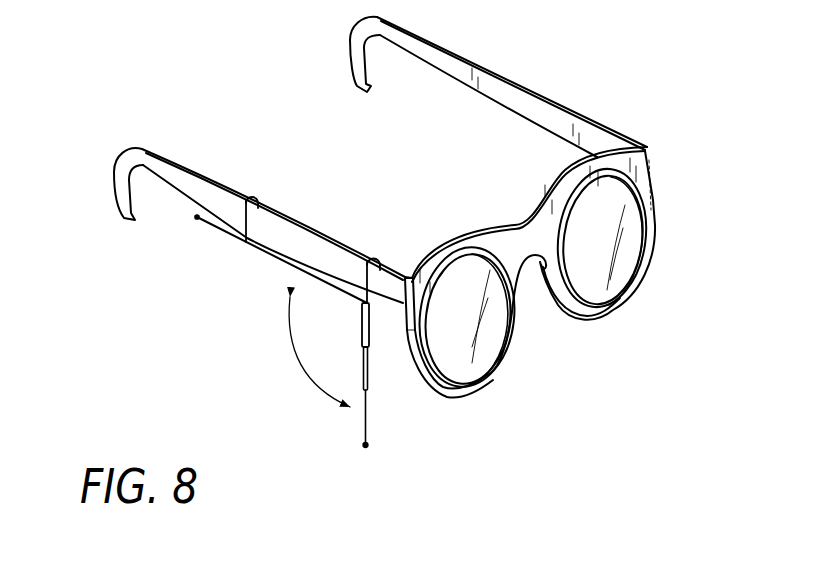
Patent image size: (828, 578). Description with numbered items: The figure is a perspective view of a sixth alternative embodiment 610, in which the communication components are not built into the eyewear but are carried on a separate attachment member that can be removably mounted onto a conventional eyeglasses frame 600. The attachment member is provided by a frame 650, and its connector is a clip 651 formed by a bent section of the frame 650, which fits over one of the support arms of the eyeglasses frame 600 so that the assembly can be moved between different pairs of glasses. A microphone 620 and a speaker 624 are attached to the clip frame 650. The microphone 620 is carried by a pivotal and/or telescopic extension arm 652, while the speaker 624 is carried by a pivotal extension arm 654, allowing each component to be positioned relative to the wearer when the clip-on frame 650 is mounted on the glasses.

The conventional eyeglasses frame 600 is at (510, 215).
The sixth alternative embodiment 610 is at (285, 348).
The microphone 620 is at (368, 447).
The speaker 624 is at (195, 218).
The frame 650 is at (282, 202).
The clip 651 is at (257, 197).
The extension arm 652 is at (377, 393).
The extension arm 654 is at (217, 237).